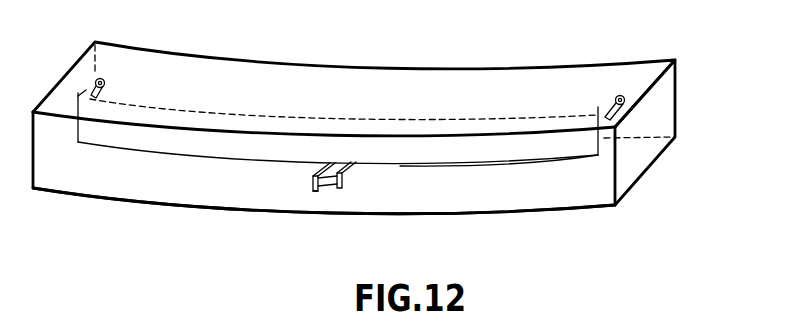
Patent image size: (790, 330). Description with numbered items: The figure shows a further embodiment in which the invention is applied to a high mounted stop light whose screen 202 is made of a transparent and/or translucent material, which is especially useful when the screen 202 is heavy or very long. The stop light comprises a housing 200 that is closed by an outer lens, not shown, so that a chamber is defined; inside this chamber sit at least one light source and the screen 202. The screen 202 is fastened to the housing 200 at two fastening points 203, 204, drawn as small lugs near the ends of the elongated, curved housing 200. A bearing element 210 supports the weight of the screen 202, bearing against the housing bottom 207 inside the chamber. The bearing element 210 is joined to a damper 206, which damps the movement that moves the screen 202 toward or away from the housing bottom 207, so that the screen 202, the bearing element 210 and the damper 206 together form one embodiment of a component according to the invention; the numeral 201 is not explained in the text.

The housing 200 is at (292, 82).
The lower wall of recess 201 is at (547, 165).
The screen 202 is at (504, 148).
The fastening point 203 is at (91, 88).
The fastening point 204 is at (614, 100).
The damper 206 is at (312, 187).
The housing bottom 207 is at (133, 182).
The bearing element 210 is at (355, 163).